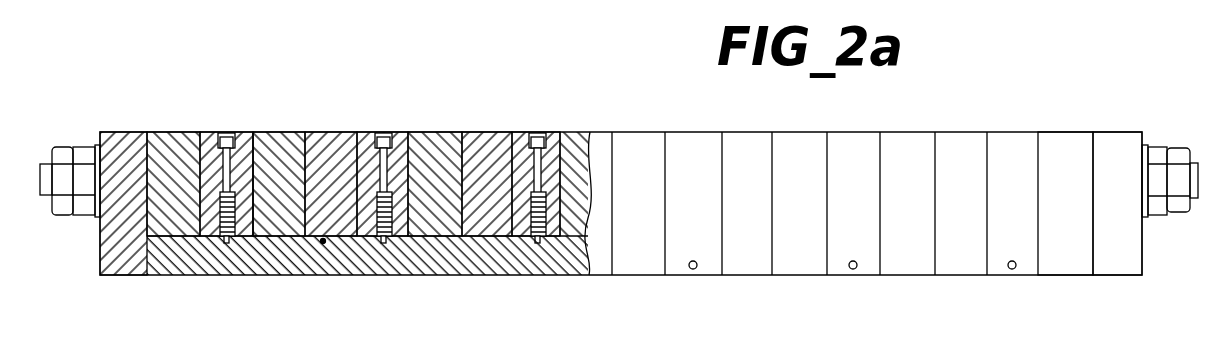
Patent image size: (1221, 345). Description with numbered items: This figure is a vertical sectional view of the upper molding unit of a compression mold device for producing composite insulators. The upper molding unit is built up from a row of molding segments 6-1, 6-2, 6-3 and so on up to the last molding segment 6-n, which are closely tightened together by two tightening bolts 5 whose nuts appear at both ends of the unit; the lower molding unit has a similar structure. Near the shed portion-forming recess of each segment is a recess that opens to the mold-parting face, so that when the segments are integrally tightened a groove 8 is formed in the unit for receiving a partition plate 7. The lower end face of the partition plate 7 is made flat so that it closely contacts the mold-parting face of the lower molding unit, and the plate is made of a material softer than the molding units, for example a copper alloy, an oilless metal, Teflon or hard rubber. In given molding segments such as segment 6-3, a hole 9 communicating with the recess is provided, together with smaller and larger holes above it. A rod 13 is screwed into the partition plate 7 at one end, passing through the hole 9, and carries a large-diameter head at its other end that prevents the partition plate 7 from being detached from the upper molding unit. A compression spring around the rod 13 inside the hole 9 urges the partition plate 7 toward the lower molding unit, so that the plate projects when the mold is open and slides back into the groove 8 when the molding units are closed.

The tightening bolt 5 is at (1170, 226).
The molding segment 6-1 is at (122, 138).
The molding segment 6-2 is at (172, 132).
The molding segment 6-3 is at (245, 132).
The molding segment 6-n is at (1120, 132).
The partition plate 7 is at (271, 262).
The groove 8 is at (255, 208).
The hole 9 is at (324, 240).
The rod 13 is at (215, 183).